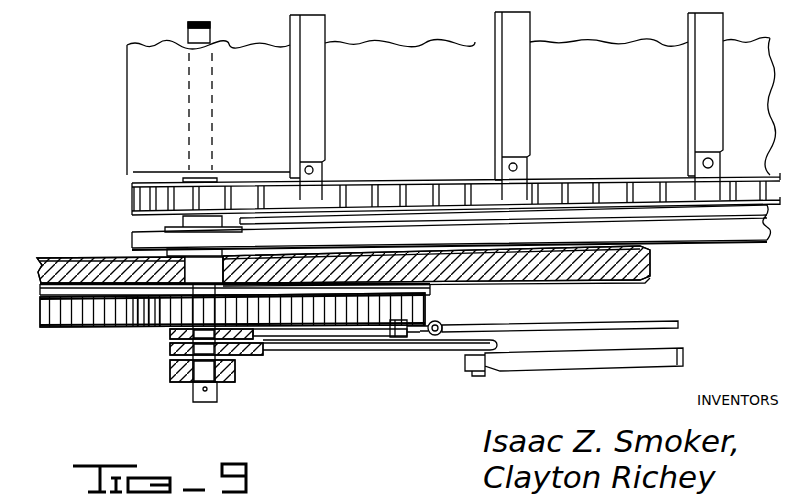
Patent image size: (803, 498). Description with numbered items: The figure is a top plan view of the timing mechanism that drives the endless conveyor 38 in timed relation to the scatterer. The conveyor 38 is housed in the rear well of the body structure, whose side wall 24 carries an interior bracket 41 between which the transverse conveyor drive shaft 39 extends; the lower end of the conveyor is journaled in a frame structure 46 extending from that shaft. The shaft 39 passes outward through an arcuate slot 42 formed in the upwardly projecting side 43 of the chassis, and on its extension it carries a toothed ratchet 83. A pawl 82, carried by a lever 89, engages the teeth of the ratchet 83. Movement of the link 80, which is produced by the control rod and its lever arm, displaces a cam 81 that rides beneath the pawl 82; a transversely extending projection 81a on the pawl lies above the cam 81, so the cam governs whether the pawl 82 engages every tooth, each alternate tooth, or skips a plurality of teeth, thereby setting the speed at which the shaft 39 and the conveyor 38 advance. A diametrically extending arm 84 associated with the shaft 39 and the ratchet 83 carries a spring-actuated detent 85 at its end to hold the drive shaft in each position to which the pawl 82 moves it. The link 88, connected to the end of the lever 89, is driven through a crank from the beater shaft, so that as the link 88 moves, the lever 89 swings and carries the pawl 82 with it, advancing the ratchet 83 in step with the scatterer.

The side wall 24 is at (370, 235).
The endless conveyor 38 is at (347, 185).
The conveyor drive shaft 39 is at (210, 30).
The bracket 41 is at (205, 230).
The arcuate slot 42 is at (170, 271).
The upwardly projecting side of chassis 43 is at (503, 282).
The frame structure 46 is at (625, 147).
The link 80 is at (552, 325).
The cam 81 is at (325, 330).
The transversely extending projection 81a is at (397, 332).
The pawl 82 is at (363, 312).
The ratchet 83 is at (120, 312).
The diametrically extending arm 84 is at (237, 370).
The spring-actuated detent 85 is at (152, 327).
The link 88 is at (588, 360).
The lever 89 is at (462, 347).